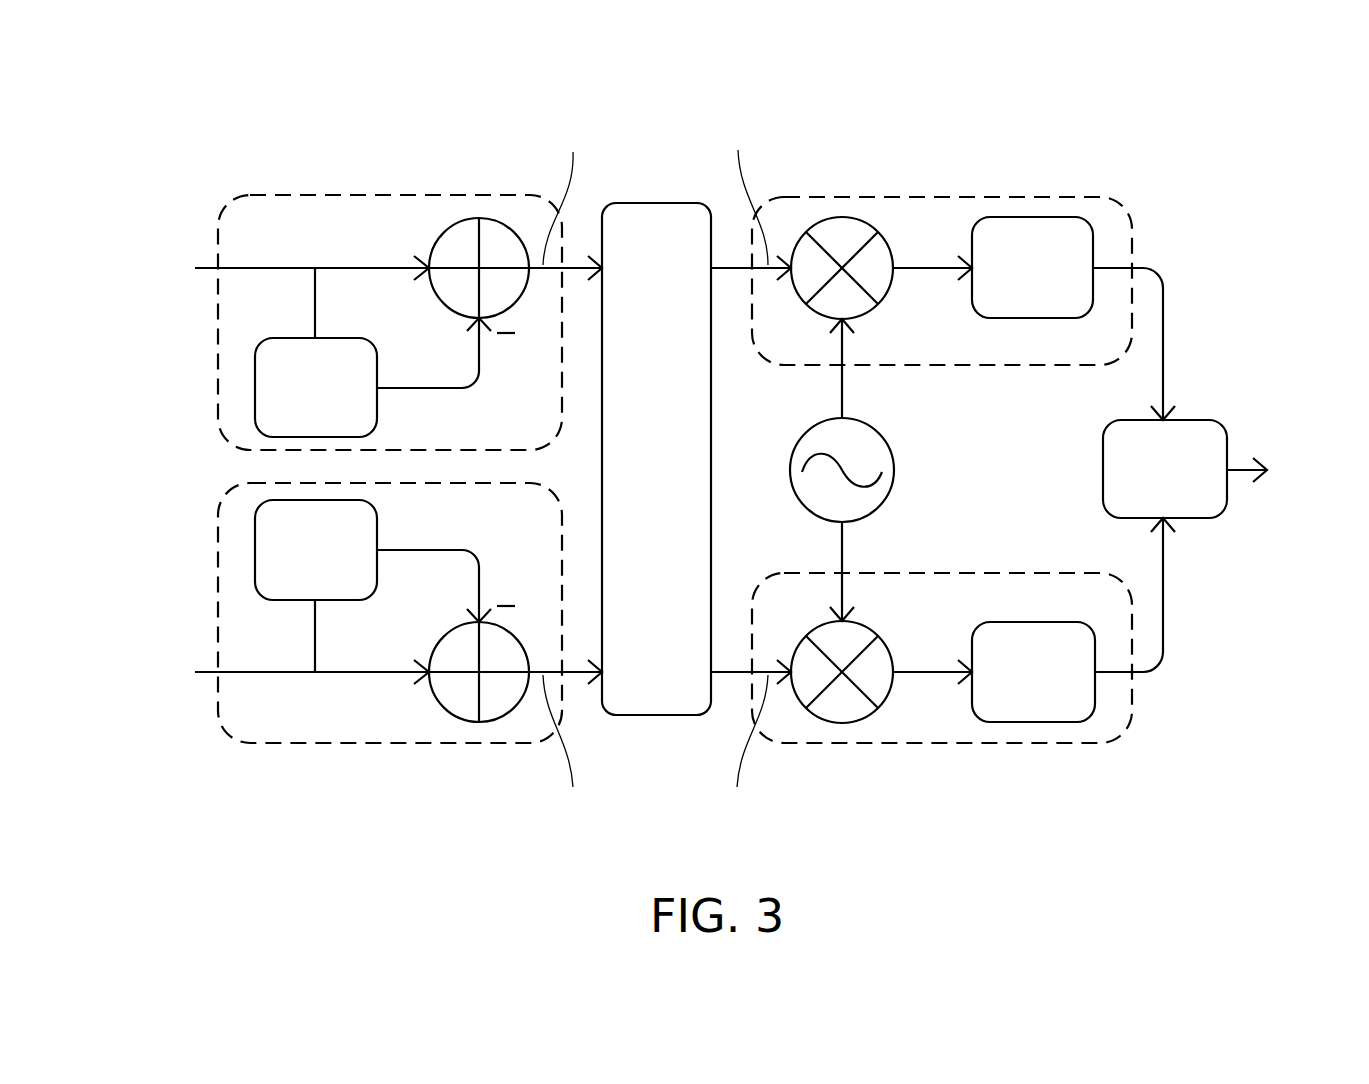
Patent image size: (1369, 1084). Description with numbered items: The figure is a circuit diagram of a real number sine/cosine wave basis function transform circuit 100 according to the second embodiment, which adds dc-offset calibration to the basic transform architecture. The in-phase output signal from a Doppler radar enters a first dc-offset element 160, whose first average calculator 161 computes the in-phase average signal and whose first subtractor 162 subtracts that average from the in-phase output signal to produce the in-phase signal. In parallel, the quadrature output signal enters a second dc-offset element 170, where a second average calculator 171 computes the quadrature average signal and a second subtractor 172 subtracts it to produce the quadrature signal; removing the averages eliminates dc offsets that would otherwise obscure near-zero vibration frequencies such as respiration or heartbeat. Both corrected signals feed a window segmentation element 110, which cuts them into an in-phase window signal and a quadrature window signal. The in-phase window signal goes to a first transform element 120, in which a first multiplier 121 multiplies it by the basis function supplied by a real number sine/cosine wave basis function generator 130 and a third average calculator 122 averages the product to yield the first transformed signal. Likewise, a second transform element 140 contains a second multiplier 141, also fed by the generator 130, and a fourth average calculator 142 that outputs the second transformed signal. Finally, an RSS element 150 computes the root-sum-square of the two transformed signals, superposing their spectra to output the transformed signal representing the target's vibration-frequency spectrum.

The real number sine/cosine wave basis function transform circuit 100 is at (140, 134).
The window segmentation element 110 is at (640, 203).
The first transform element 120 is at (950, 197).
The first multiplier 121 is at (842, 217).
The third average calculator 122 is at (1053, 217).
The real number sine/cosine wave basis function generator 130 is at (894, 470).
The second transform element 140 is at (950, 743).
The second multiplier 141 is at (842, 722).
The fourth average calculator 142 is at (1052, 722).
The root-sum-square (RSS) element 150 is at (1216, 420).
The first dc-offset element 160 is at (312, 195).
The first average calculator 161 is at (255, 388).
The first subtractor 162 is at (458, 217).
The second dc-offset element 170 is at (312, 743).
The second average calculator 171 is at (255, 550).
The second subtractor 172 is at (460, 722).